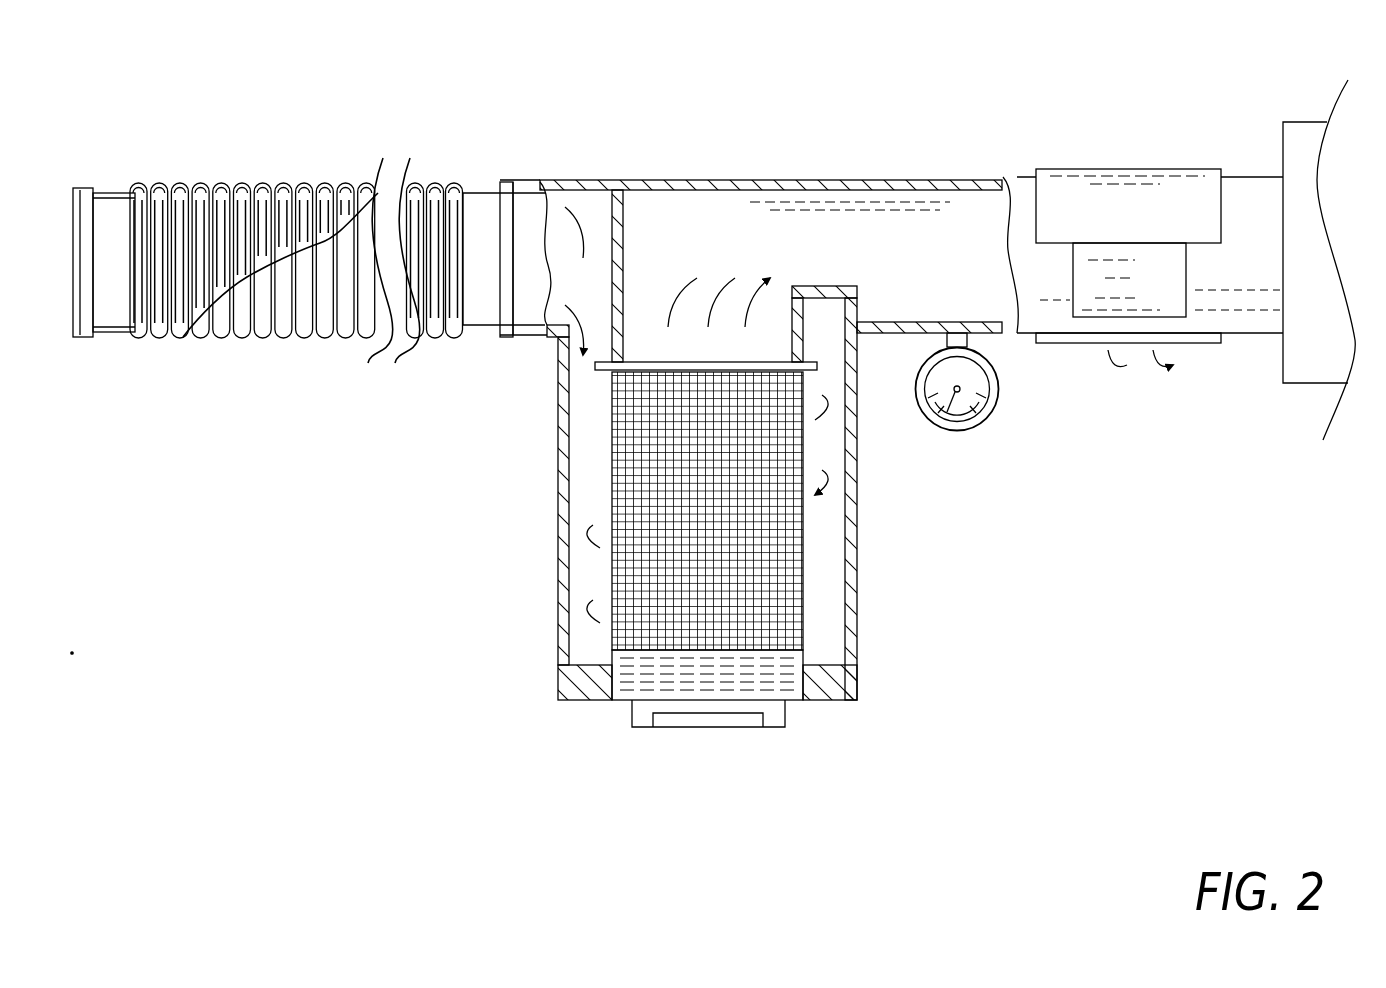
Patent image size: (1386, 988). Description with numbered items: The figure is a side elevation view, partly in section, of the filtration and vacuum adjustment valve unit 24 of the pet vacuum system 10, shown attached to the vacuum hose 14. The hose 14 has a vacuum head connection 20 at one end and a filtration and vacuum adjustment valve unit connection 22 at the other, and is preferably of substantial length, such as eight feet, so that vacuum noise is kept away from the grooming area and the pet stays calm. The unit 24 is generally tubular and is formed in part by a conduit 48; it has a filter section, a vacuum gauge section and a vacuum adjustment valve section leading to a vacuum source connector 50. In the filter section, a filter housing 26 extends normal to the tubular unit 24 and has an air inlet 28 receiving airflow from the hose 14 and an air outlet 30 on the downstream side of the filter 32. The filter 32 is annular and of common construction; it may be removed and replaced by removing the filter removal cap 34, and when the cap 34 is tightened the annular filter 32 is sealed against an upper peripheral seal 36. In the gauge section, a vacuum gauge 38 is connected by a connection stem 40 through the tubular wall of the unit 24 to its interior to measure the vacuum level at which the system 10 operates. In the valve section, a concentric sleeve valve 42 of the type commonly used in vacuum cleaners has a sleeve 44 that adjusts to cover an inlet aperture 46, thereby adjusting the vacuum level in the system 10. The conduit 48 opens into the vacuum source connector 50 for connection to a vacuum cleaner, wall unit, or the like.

The pet vacuum system 10 is at (538, 97).
The vacuum hose 14 is at (237, 183).
The vacuum head connection 20 is at (110, 186).
The filtration and vacuum adjustment valve unit connection 22 is at (480, 182).
The filtration and vacuum adjustment valve unit 24 is at (862, 165).
The filter housing 26 is at (552, 530).
The air inlet 28 is at (553, 335).
The air outlet 30 is at (715, 210).
The filter 32 is at (795, 555).
The filter removal cap 34 is at (720, 727).
The upper peripheral seal 36 is at (643, 342).
The vacuum gauge 38 is at (993, 407).
The connection stem 40 is at (953, 320).
The concentric sleeve valve 42 is at (1205, 132).
The sleeve 44 is at (1075, 168).
The inlet aperture 46 is at (1178, 290).
The conduit 48 is at (1245, 317).
The vacuum source connector 50 is at (1302, 122).